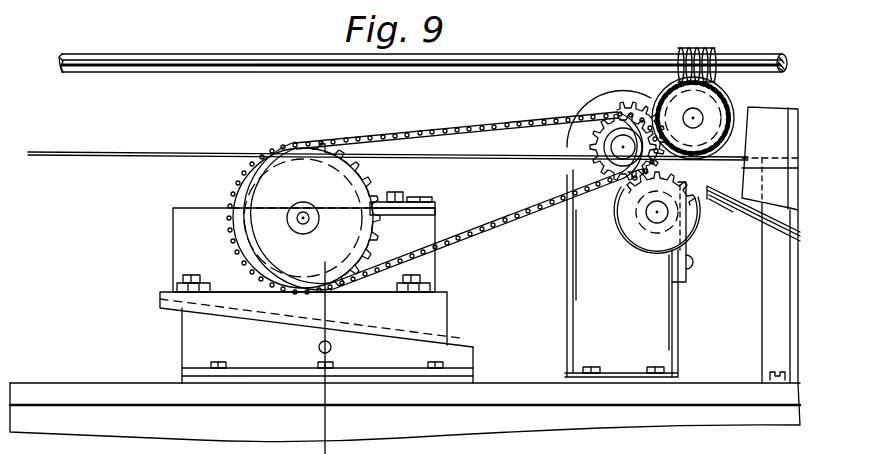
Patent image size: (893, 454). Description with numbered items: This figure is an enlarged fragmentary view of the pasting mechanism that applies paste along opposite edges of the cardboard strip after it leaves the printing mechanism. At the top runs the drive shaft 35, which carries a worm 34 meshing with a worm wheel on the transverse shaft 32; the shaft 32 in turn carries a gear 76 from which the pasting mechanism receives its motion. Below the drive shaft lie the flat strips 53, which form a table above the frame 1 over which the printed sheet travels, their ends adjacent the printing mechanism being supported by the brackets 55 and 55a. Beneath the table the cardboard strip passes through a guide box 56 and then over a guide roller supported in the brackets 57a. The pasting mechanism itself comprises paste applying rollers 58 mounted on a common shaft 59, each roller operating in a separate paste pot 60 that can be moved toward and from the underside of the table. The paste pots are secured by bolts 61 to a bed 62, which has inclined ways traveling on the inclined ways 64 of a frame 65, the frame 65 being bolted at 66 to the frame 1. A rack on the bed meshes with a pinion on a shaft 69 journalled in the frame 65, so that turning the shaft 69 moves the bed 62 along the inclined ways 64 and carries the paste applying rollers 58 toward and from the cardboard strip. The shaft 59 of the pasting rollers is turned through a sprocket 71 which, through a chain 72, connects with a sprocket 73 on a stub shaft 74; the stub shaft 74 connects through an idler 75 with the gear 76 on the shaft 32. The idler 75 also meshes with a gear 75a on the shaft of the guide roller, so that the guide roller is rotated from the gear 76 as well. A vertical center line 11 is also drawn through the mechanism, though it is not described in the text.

The frame 1 is at (68, 393).
The center line 11 is at (325, 349).
The shaft 32 is at (698, 114).
The worm 34 is at (718, 40).
The drive shaft 35 is at (245, 55).
The flat strips 53 is at (152, 138).
The bracket 55 is at (773, 113).
The bracket 55a is at (775, 285).
The guide box 56 is at (760, 224).
The brackets 57a is at (678, 317).
The paste applying rollers 58 is at (245, 194).
The shaft 59 is at (297, 221).
The paste pot 60 is at (175, 233).
The bolts 61 is at (186, 280).
The bed 62 is at (440, 327).
The inclined ways 64 is at (460, 345).
The frame 65 is at (195, 338).
The bolts 66 is at (213, 366).
The shaft 69 is at (318, 348).
The sprocket 71 is at (358, 173).
The chain 72 is at (428, 129).
The sprocket 73 is at (582, 176).
The stub shaft 74 is at (622, 150).
The idler 75 is at (585, 136).
The gear 75a is at (618, 230).
The gear 76 is at (658, 95).